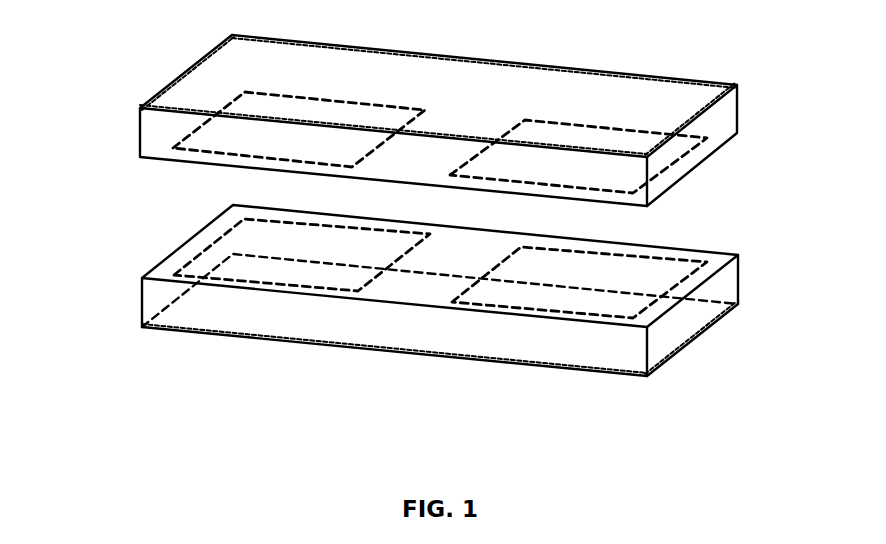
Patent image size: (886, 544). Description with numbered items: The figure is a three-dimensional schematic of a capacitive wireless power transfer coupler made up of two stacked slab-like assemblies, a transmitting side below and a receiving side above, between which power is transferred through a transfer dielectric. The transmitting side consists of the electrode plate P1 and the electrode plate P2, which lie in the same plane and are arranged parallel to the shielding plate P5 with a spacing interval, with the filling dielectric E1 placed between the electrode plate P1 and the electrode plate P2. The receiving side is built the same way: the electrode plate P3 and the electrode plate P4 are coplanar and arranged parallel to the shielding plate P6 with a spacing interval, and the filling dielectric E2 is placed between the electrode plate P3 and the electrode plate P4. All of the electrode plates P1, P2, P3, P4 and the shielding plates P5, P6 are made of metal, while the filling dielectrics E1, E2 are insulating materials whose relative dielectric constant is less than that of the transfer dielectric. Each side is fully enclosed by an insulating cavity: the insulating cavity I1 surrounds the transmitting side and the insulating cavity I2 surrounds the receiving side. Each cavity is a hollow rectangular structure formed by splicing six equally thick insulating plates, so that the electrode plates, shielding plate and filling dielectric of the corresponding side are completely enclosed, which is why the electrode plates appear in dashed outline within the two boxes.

The filling dielectric E1 is at (157, 300).
The filling dielectric E2 is at (155, 133).
The insulating cavity I1 is at (649, 328).
The insulating cavity I2 is at (737, 133).
The electrode plate P1 is at (248, 232).
The electrode plate P2 is at (637, 270).
The electrode plate P3 is at (255, 147).
The electrode plate P4 is at (615, 182).
The shielding plate P5 is at (597, 355).
The shielding plate P6 is at (615, 92).